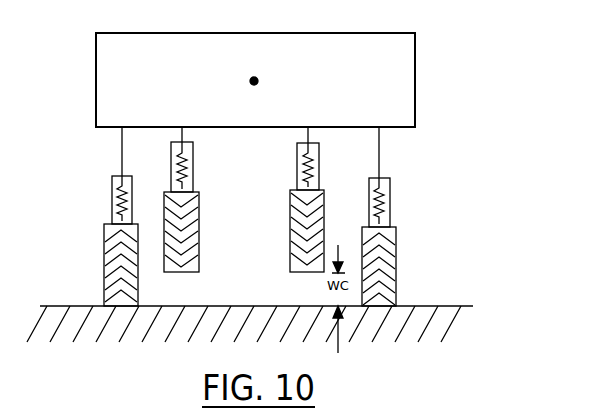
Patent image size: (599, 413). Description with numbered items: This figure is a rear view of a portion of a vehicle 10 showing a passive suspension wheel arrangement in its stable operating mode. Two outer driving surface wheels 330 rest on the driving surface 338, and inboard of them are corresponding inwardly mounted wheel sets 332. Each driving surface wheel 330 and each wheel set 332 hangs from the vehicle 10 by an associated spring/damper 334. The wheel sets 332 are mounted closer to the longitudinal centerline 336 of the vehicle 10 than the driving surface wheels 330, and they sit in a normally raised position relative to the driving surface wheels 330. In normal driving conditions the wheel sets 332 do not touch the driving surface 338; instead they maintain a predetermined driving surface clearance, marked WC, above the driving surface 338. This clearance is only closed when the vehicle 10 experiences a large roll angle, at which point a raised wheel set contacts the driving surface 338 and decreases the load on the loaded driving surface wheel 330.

The vehicle 10 is at (415, 78).
The driving surface wheel 330 is at (104, 250).
The wheel set 332 is at (290, 263).
The spring/damper 334 is at (112, 190).
The longitudinal centerline 336 is at (258, 80).
The driving surface 338 is at (421, 306).